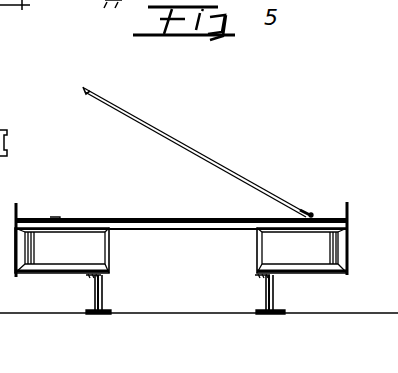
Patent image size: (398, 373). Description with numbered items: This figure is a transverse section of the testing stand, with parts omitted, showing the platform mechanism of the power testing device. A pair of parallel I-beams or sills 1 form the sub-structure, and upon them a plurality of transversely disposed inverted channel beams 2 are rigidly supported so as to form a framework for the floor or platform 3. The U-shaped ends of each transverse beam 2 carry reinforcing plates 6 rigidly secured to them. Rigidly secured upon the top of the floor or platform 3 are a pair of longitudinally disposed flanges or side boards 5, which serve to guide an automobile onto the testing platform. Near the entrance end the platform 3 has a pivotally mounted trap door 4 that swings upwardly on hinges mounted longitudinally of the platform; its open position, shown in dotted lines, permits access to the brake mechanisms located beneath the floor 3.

The I-beams or sills 1 is at (267, 286).
The inverted channel beams 2 is at (197, 227).
The floor or platform 3 is at (37, 219).
The trap door 4 is at (220, 168).
The flanges or side boards 5 is at (16, 204).
The reinforcing plates 6 is at (68, 248).